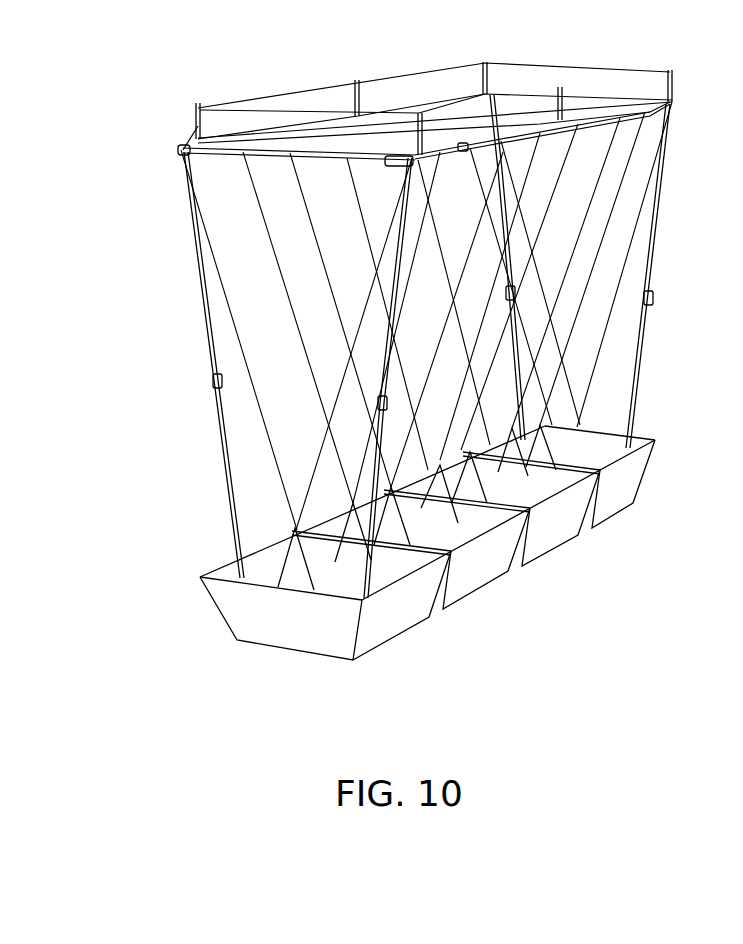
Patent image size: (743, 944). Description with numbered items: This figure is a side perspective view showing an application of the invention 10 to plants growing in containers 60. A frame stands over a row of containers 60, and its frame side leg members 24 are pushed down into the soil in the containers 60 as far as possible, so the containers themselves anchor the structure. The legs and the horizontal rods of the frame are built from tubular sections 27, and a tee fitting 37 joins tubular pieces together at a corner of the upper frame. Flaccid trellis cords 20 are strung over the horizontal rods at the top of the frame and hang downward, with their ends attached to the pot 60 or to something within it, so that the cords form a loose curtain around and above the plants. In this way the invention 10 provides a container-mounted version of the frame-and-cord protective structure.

The invention in general 10 is at (563, 612).
The trellis cords 20 is at (621, 281).
The frame side leg member 24 is at (220, 438).
The tubular sections of legs and rods 27 is at (647, 113).
The tee fitting 37 is at (181, 150).
The containers 60 is at (245, 637).